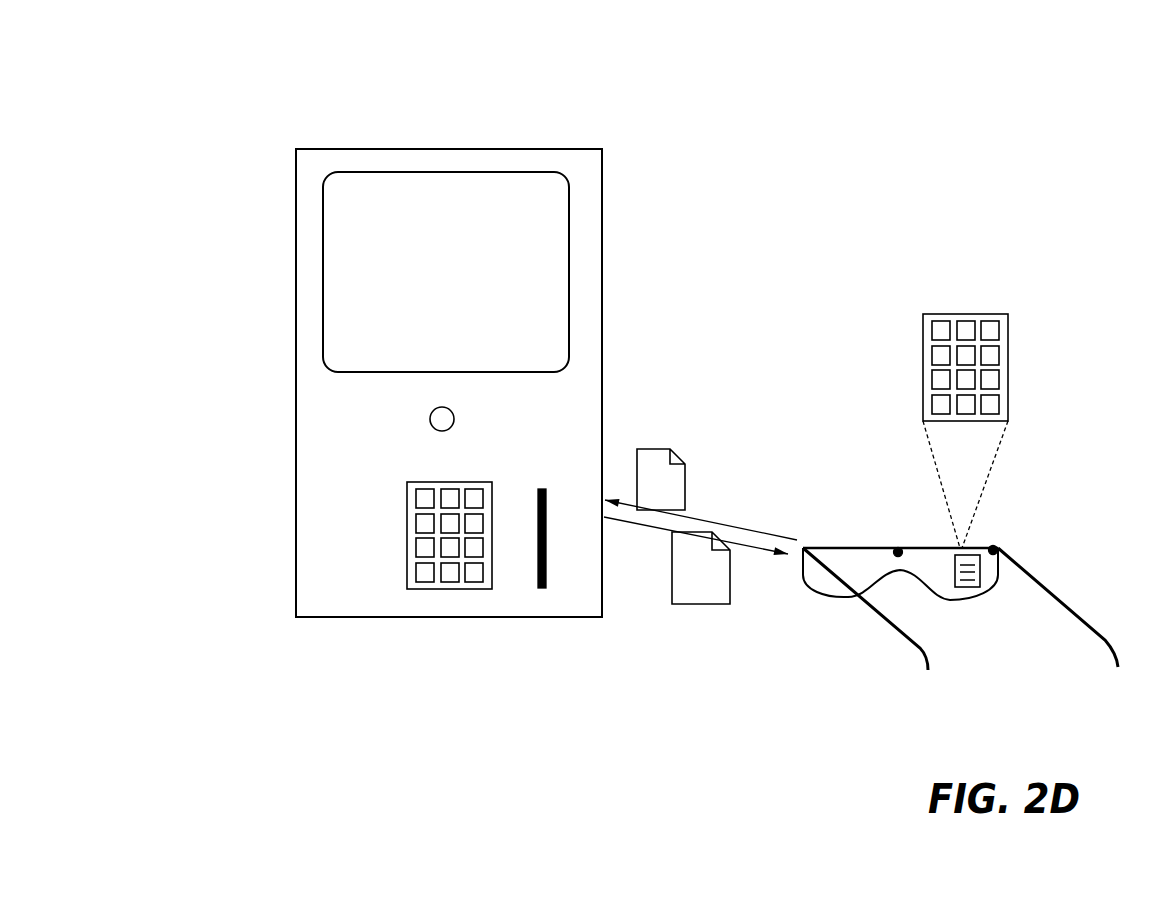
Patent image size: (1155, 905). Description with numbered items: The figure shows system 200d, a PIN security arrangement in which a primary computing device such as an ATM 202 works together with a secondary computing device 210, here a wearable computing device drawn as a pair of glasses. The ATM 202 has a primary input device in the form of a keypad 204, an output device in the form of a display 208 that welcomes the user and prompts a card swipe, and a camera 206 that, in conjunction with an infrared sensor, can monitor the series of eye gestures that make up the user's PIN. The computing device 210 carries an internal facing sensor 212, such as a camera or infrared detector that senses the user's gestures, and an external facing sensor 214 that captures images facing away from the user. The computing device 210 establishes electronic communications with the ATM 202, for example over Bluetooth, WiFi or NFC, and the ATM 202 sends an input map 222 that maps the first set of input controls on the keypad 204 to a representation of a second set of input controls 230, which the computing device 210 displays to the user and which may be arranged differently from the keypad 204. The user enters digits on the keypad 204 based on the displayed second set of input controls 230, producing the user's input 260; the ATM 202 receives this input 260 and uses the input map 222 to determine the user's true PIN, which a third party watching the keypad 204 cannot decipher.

The system 200d is at (271, 84).
The primary computing device 202 is at (296, 444).
The primary input device 204 is at (407, 543).
The camera 206 is at (430, 419).
The output device 208 is at (323, 339).
The secondary computing device 210 is at (826, 597).
The internal facing sensor 212 is at (998, 546).
The external facing sensor 214 is at (897, 547).
The input map 222 is at (672, 604).
The second set of input controls 230 is at (967, 588).
The user's input 260 is at (683, 458).